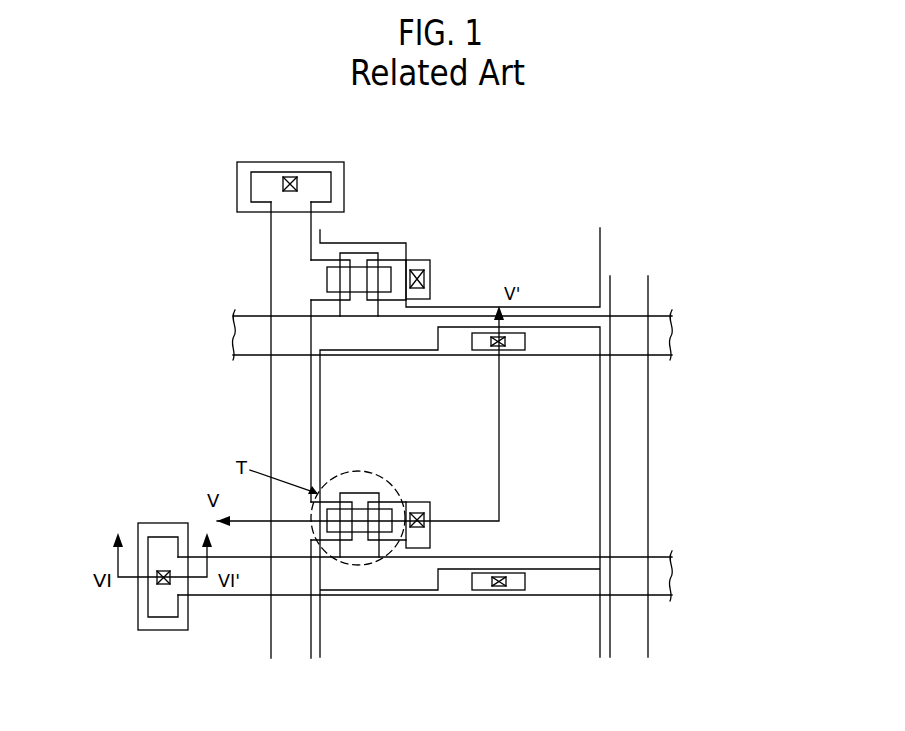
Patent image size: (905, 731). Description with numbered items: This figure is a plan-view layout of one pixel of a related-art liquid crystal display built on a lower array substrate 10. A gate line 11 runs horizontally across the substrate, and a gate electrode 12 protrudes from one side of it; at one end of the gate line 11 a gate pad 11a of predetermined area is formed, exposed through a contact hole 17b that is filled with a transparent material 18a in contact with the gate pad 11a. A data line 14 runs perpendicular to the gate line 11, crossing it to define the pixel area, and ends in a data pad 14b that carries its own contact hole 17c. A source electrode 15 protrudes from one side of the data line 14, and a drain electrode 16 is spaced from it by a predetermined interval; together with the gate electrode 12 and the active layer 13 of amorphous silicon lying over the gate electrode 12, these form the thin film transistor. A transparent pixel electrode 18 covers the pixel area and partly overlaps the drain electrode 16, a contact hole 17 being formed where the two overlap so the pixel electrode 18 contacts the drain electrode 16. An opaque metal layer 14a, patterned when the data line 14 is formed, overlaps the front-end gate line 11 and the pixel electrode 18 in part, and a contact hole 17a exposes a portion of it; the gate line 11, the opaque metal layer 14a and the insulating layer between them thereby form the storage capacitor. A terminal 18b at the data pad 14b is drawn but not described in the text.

The lower array substrate 10 is at (670, 497).
The gate line 11 is at (545, 556).
The gate pad 11a is at (163, 538).
The gate electrode 12 is at (362, 497).
The active layer 13 is at (384, 530).
The data line 14 is at (282, 410).
The opaque metal layer 14a is at (517, 591).
The data pad 14b is at (331, 183).
The source electrode 15 is at (322, 500).
The drain electrode 16 is at (415, 504).
The contact hole 17 is at (427, 518).
The contact hole 17a is at (498, 590).
The contact hole 17b is at (165, 586).
The contact hole 17c is at (290, 172).
The pixel electrode 18 is at (598, 410).
The transparent material 18a is at (140, 608).
The data pad terminal 18b is at (344, 167).